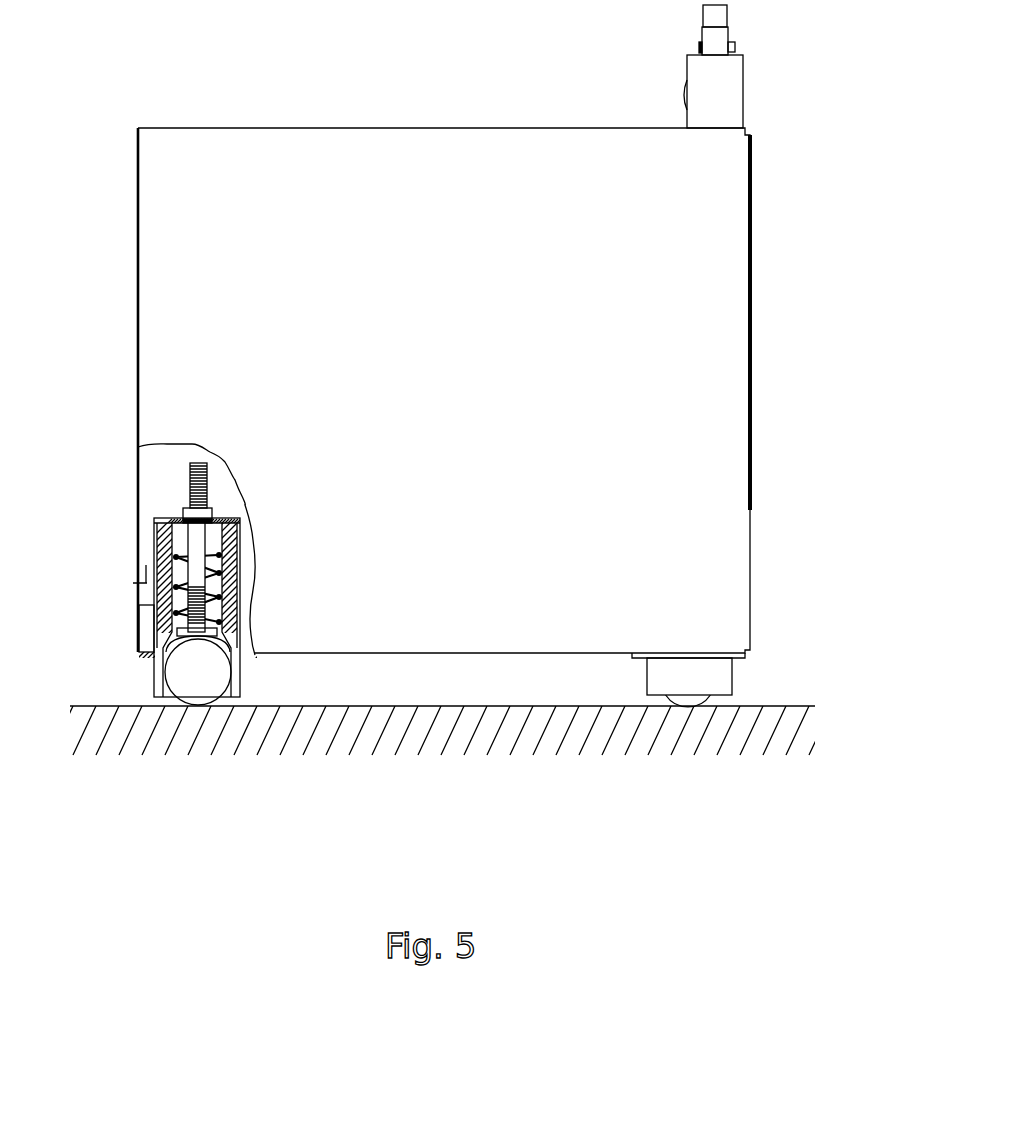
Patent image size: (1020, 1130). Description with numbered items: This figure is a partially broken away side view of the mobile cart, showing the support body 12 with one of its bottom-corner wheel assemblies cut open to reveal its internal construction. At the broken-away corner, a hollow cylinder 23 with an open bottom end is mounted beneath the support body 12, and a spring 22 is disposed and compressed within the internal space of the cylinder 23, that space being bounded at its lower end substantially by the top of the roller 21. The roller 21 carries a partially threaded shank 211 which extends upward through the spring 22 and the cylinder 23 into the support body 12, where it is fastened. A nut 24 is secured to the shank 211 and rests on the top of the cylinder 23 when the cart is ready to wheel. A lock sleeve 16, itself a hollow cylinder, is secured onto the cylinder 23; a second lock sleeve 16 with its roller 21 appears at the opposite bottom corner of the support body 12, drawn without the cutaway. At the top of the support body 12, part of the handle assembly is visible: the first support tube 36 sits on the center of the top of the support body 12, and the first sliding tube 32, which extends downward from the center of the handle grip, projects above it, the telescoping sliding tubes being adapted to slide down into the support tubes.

The support body 12 is at (718, 362).
The lock sleeve 16 is at (154, 592).
The roller 21 is at (183, 678).
The spring 22 is at (175, 556).
The hollow cylinder 23 is at (160, 626).
The nut 24 is at (188, 516).
The partially threaded shank 211 is at (190, 486).
The first sliding tube 32 is at (712, 15).
The first support tube 36 is at (722, 90).